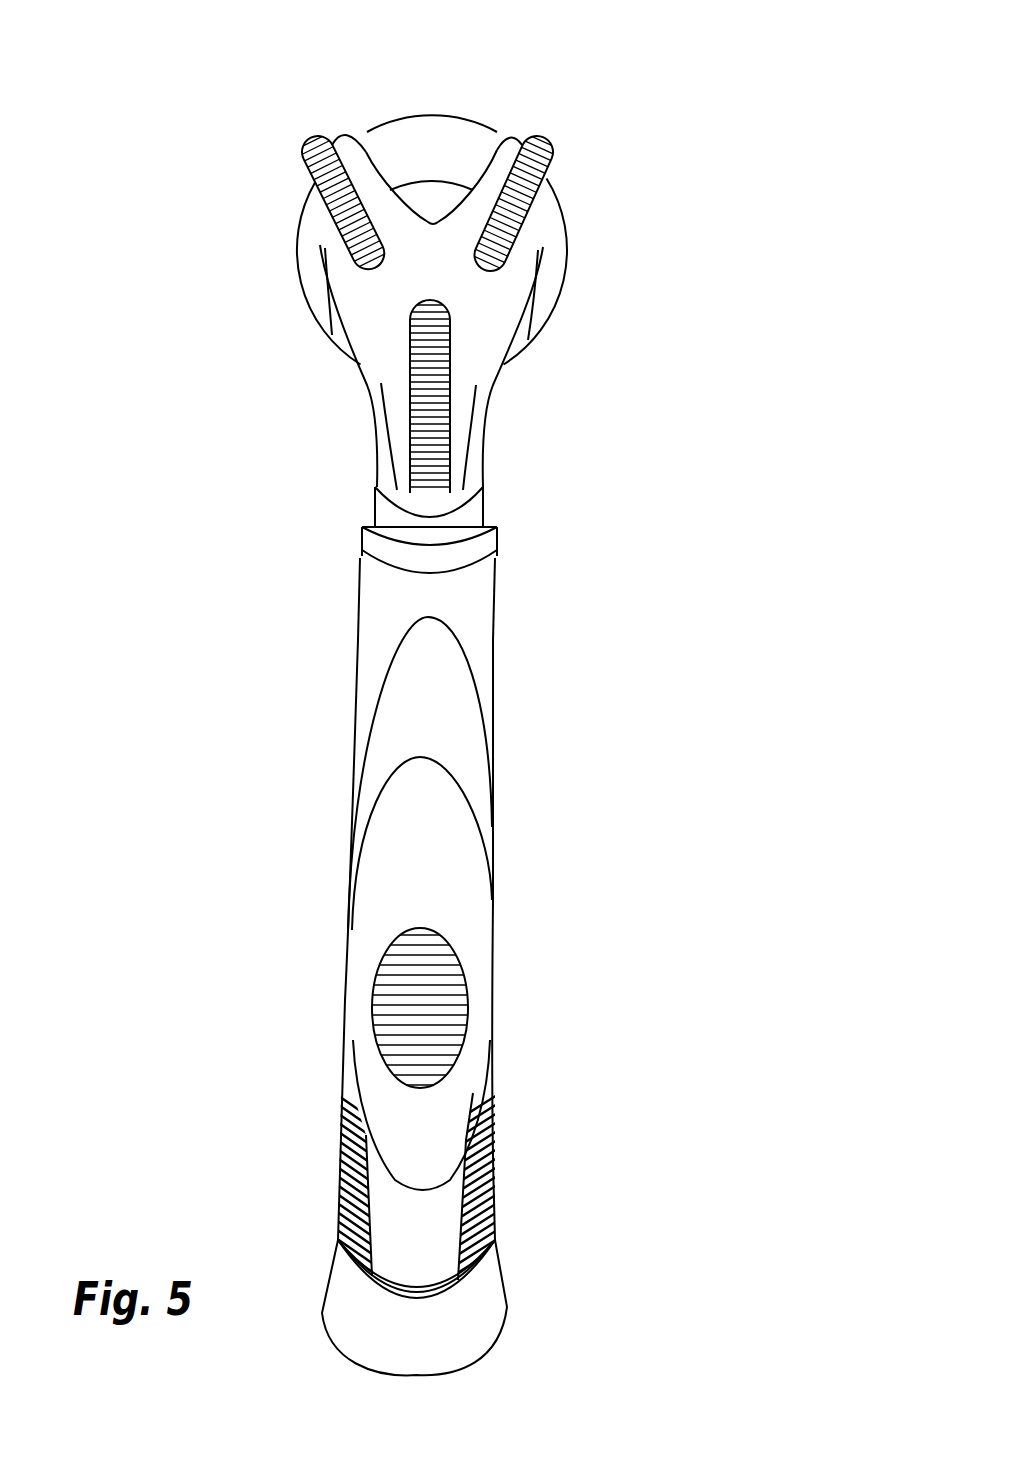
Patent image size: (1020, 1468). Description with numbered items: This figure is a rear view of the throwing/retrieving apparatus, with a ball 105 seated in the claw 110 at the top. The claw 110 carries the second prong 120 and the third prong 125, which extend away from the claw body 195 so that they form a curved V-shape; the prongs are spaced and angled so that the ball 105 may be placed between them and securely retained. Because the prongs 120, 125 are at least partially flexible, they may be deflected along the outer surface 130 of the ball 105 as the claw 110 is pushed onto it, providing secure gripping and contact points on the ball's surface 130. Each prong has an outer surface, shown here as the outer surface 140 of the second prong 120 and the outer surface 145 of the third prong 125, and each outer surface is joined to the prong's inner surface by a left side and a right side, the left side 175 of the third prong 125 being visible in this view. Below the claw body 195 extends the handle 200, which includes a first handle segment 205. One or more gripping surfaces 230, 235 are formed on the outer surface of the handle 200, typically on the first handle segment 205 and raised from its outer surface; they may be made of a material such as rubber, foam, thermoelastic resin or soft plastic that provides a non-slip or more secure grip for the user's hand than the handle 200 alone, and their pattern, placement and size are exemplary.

The ball 105 is at (593, 212).
The claw 110 is at (513, 427).
The second prong 120 is at (337, 145).
The third prong 125 is at (530, 140).
The outer surface of the spherical object 130 is at (558, 307).
The outer surface of the second prong 140 is at (340, 248).
The outer surface of the third prong 145 is at (518, 248).
The left side of the third prong 175 is at (483, 167).
The claw body 195 is at (397, 472).
The handle 200 is at (332, 1080).
The first handle segment 205 is at (472, 778).
The gripping surface 230 is at (452, 1010).
The gripping surface 235 is at (492, 1197).